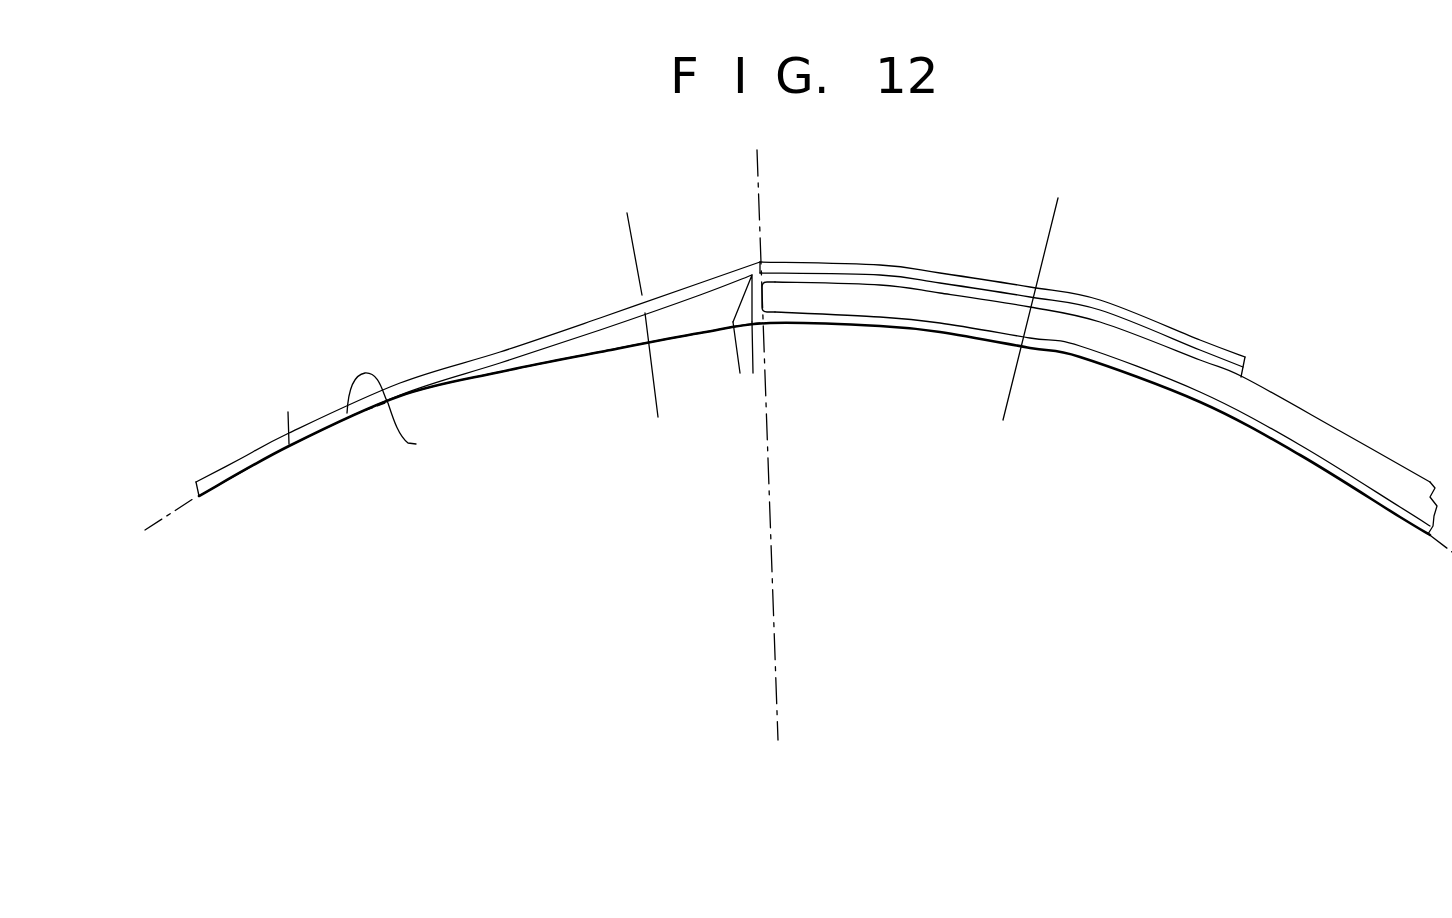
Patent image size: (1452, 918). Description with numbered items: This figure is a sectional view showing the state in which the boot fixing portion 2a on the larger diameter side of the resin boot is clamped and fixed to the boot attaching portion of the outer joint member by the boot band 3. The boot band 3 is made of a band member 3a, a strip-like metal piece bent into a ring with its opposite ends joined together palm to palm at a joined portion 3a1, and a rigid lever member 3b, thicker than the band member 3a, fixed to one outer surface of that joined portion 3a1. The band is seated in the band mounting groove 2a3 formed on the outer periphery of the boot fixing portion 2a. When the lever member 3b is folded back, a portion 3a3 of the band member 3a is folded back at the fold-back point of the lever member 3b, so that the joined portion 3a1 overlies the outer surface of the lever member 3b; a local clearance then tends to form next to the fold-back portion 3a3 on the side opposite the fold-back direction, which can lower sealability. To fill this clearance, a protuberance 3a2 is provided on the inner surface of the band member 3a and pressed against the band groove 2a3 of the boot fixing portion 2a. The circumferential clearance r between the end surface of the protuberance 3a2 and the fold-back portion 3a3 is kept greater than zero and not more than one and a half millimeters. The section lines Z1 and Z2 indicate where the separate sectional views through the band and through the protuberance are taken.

The boot fixing portion 2a is at (286, 434).
The band mounting groove 2a3 is at (406, 419).
The boot band 3 is at (1216, 310).
The band member 3a is at (531, 340).
The joined portion 3a1 is at (937, 272).
The protuberance 3a2 is at (622, 340).
The fold-back portion 3a3 is at (766, 285).
The lever member 3b is at (1080, 333).
The section line Z1— Z1 is at (1038, 310).
The section line Z2— Z2 is at (649, 317).
The circumferential clearance γ r is at (698, 376).